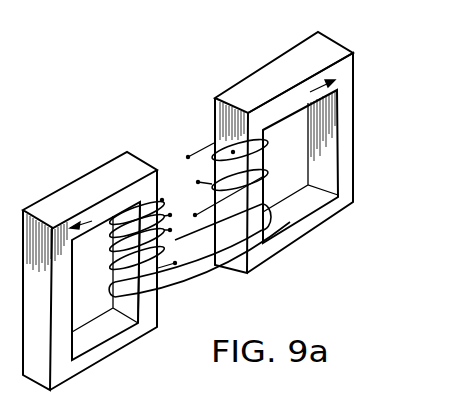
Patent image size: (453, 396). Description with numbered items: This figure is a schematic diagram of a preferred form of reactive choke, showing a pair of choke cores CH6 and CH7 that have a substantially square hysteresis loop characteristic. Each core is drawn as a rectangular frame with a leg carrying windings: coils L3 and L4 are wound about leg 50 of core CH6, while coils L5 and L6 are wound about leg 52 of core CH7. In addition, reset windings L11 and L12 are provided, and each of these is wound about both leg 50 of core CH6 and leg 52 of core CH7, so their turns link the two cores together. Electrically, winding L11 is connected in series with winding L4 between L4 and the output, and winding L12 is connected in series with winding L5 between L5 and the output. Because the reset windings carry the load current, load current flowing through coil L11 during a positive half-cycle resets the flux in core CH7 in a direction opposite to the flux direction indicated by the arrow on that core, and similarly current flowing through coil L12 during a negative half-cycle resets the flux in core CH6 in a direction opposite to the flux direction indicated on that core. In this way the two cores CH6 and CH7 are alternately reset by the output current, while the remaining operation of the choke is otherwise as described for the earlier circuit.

The choke core CH6 is at (112, 347).
The choke core CH7 is at (302, 232).
The leg 50 is at (153, 306).
The leg 52 is at (218, 130).
The coil L3 is at (163, 199).
The coil L4 is at (153, 231).
The coil L5 is at (269, 143).
The coil L6 is at (269, 172).
The reset winding L11 is at (196, 270).
The reset winding L12 is at (273, 223).